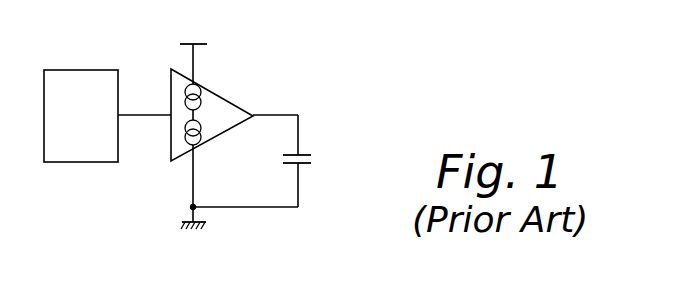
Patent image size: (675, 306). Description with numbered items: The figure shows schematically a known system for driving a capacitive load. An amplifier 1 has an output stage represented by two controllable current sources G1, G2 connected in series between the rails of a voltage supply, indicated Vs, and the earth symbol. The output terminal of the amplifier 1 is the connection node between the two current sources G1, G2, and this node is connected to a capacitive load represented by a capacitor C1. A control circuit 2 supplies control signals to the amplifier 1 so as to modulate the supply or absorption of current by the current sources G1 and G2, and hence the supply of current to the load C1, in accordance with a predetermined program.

The amplifier 1 is at (228, 102).
The control circuit 2 is at (75, 78).
The controllable current source G1 is at (184, 95).
The controllable current source G2 is at (184, 135).
The capacitor C1 is at (308, 164).